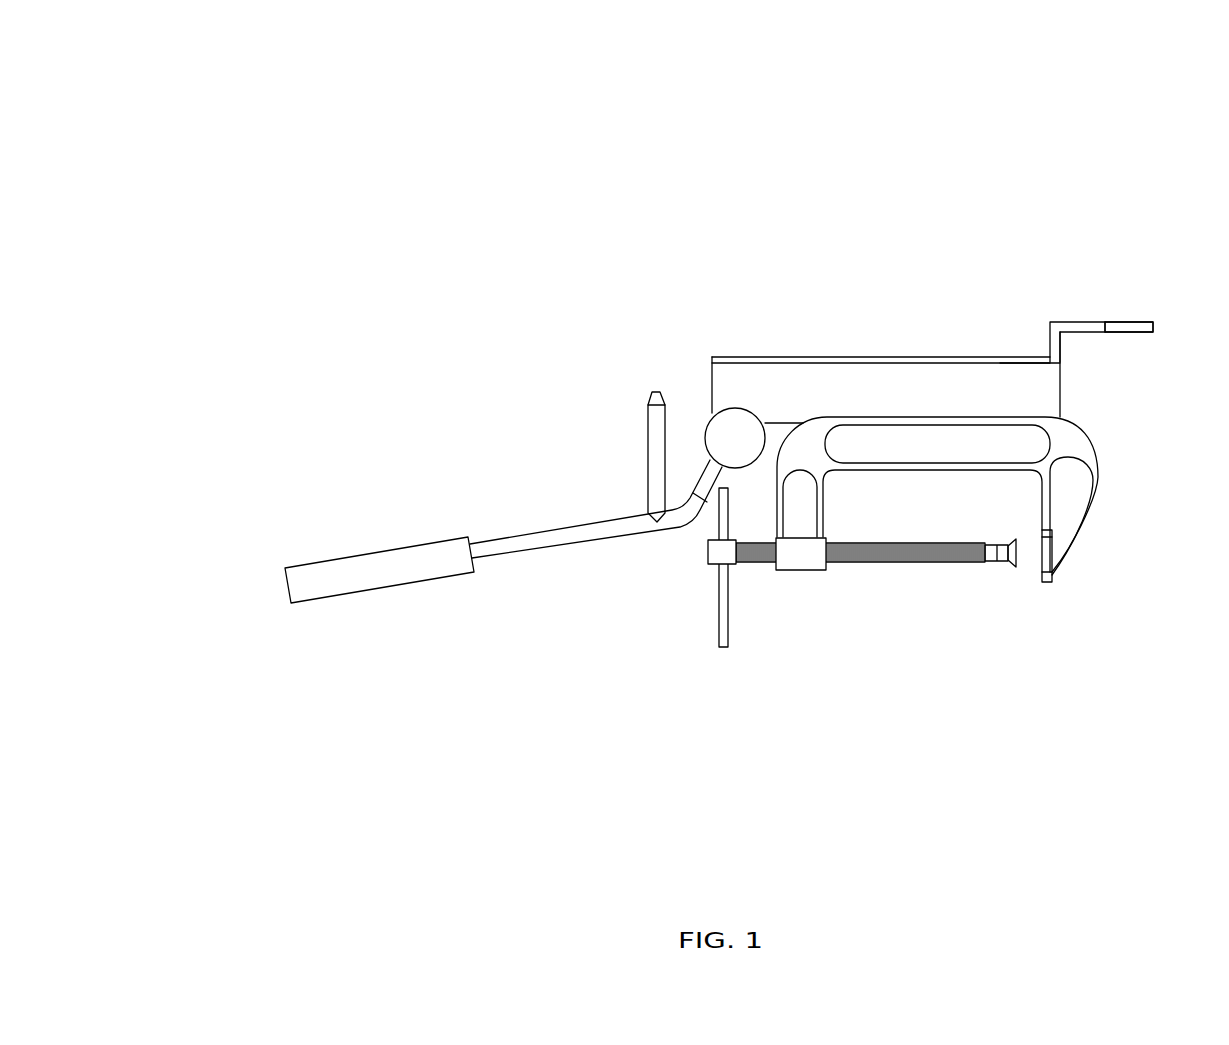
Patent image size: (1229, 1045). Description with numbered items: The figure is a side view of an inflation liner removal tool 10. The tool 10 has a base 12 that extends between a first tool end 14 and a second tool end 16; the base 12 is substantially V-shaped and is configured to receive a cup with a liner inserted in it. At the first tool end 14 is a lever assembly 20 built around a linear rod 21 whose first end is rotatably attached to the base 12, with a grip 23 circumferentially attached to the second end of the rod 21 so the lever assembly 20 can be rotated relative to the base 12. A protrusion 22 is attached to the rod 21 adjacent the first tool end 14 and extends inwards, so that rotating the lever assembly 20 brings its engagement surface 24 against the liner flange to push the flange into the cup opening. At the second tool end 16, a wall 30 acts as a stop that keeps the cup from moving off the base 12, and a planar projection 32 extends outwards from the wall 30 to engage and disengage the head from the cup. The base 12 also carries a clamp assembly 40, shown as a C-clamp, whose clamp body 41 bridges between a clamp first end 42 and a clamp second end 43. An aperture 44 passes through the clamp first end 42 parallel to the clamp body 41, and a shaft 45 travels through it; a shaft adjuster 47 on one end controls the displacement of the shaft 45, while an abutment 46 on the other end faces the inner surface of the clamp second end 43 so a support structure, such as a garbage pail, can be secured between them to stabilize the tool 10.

The tool 10 is at (200, 193).
The base 12 is at (1050, 397).
The first tool end 14 is at (710, 383).
The second tool end 16 is at (1060, 363).
The lever assembly 20 is at (422, 532).
The linear rod 21 is at (587, 538).
The protrusion 22 is at (655, 443).
The grip 23 is at (427, 570).
The engagement surface 24 is at (652, 397).
The wall 30 is at (1048, 330).
The planar projection 32 is at (1140, 328).
The clamp assembly 40 is at (968, 575).
The clamp body 41 is at (925, 470).
The clamp first end 42 is at (823, 523).
The clamp second end 43 is at (1093, 510).
The aperture 44 is at (775, 570).
The shaft 45 is at (903, 562).
The abutment 46 is at (1010, 562).
The shaft adjuster 47 is at (723, 645).